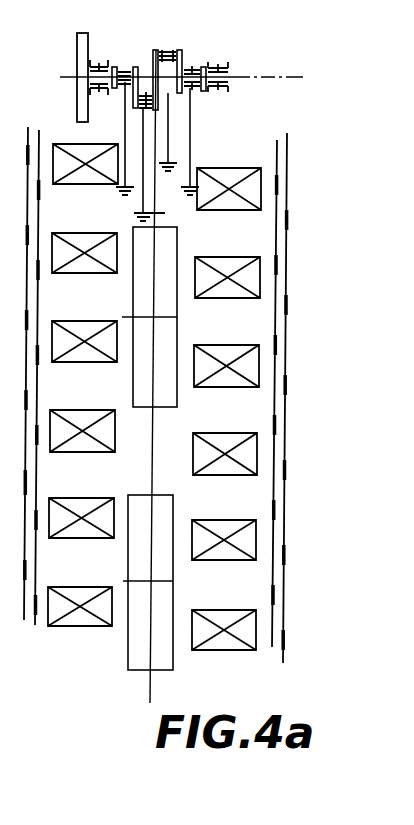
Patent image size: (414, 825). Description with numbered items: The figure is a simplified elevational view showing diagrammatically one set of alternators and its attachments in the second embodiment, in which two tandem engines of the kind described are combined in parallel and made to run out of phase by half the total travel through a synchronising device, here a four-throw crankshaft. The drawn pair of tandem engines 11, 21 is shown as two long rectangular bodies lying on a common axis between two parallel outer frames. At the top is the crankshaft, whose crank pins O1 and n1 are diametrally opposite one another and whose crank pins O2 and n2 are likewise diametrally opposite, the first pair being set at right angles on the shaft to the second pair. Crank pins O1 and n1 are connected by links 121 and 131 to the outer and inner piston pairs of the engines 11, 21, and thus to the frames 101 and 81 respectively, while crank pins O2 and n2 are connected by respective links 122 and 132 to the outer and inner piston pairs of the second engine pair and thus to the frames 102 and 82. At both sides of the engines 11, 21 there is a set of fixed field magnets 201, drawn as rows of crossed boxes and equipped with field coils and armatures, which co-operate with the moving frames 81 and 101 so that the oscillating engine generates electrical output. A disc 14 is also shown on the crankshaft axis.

The flywheel disc 14 is at (84, 38).
The crankshaft pin O2 is at (130, 69).
The crankshaft pin n1 is at (145, 97).
The crankshaft pin O1 is at (168, 50).
The crankshaft pin n2 is at (199, 67).
The link 122 is at (125, 105).
The link 131 is at (142, 133).
The link 121 is at (169, 148).
The link 132 is at (191, 112).
The frame 81 is at (25, 596).
The frame 101 is at (33, 622).
The frame 102 is at (272, 541).
The frame 82 is at (284, 560).
The fixed field magnets 201 is at (86, 620).
The tandem engine 11 is at (149, 317).
The tandem engine 21 is at (148, 582).